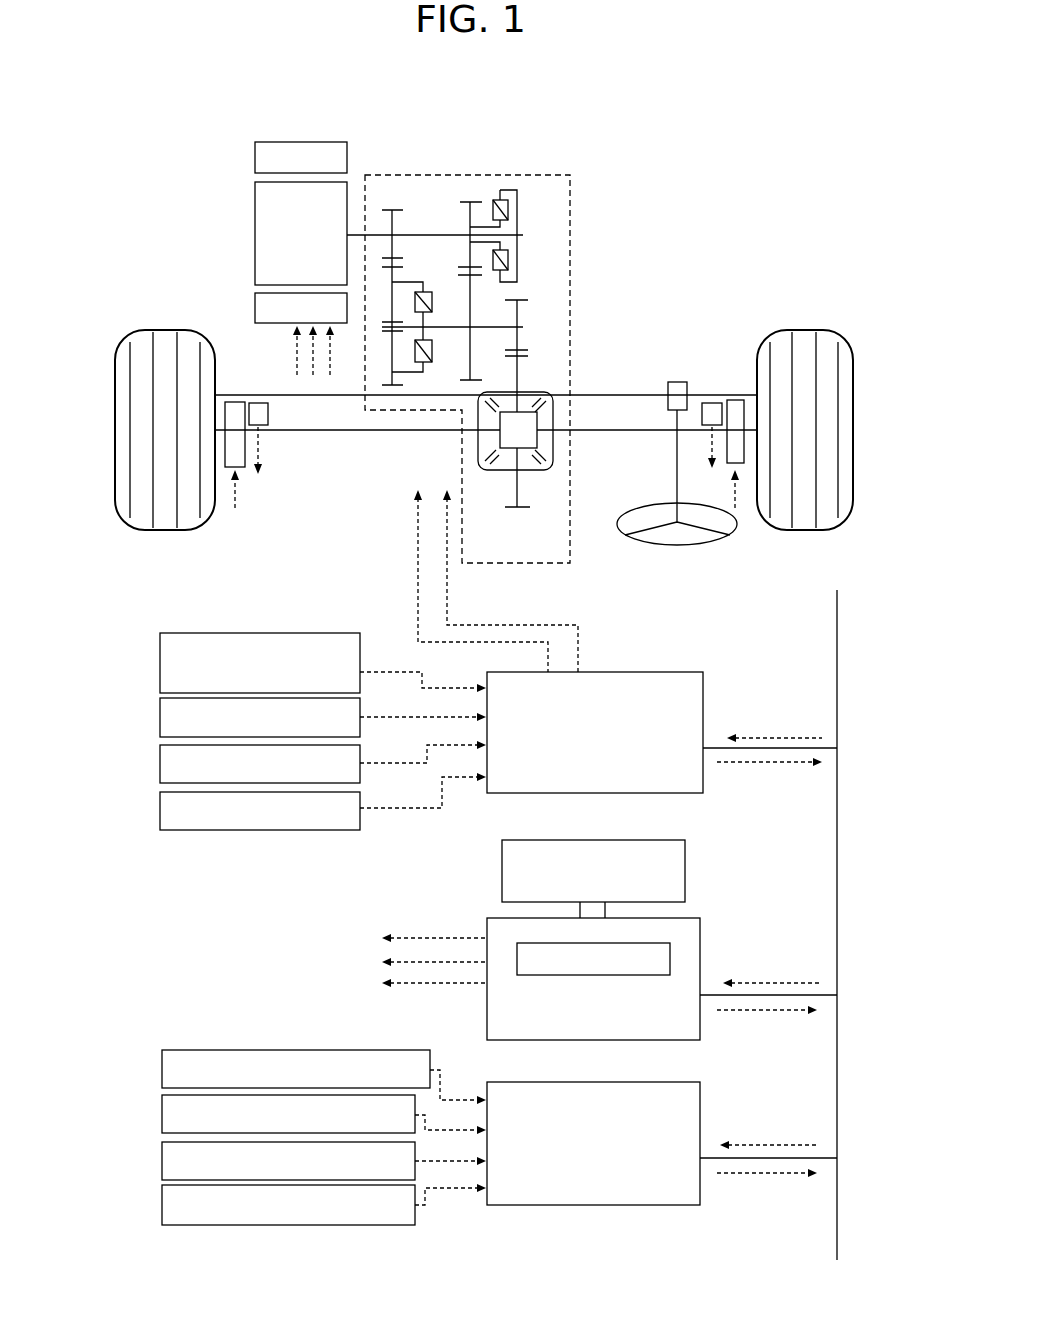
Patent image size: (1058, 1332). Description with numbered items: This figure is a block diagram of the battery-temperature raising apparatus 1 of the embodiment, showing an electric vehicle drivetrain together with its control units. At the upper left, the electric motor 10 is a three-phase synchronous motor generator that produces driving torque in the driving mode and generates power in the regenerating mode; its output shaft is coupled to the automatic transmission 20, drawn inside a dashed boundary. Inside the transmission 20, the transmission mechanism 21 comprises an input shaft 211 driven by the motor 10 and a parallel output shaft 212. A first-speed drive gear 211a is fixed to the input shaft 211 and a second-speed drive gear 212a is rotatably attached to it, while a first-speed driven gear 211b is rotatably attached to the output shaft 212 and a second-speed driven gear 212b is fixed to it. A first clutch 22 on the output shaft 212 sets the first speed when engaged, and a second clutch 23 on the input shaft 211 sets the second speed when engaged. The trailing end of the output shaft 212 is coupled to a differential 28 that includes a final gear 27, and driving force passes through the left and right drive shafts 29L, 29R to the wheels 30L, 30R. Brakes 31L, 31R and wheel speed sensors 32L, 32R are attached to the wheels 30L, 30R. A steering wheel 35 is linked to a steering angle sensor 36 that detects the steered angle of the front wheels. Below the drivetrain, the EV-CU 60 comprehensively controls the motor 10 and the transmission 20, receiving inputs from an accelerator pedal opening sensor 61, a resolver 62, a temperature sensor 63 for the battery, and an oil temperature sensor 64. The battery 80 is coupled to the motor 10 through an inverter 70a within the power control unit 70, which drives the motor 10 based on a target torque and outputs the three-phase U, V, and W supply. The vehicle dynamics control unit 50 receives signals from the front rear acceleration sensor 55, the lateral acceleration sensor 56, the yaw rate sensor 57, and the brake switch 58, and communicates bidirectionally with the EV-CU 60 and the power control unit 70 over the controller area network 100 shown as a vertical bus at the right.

The battery-temperature raising apparatus 1 is at (600, 168).
The electric motor 10 is at (255, 225).
The automatic transmission 20 is at (570, 258).
The transmission mechanism 21 is at (540, 236).
The first clutch 22 is at (432, 302).
The second clutch 23 is at (512, 208).
The final gear 27 is at (548, 351).
The differential 28 is at (553, 414).
The left drive shaft 29L is at (315, 432).
The right drive shaft 29R is at (605, 432).
The left wheel 30L is at (180, 330).
The right wheel 30R is at (805, 330).
The left brake 31L is at (235, 400).
The right brake 31R is at (735, 400).
The left wheel speed sensor 32L is at (258, 403).
The right wheel speed sensor 32R is at (711, 403).
The steering wheel 35 is at (660, 505).
The steering angle sensor 36 is at (672, 382).
The vehicle dynamics control unit 50 is at (700, 1122).
The front rear acceleration sensor 55 is at (162, 1073).
The lateral acceleration sensor 56 is at (162, 1118).
The yaw rate sensor 57 is at (162, 1164).
The brake switch 58 is at (162, 1208).
The EV-CU 60 is at (703, 703).
The accelerator pedal opening sensor 61 is at (160, 675).
The resolver 62 is at (160, 719).
The temperature sensor 63 is at (160, 765).
The oil temperature sensor 64 is at (160, 811).
The power control unit 70 is at (700, 928).
The inverter 70a is at (670, 960).
The battery 80 is at (685, 878).
The controller area network 100 is at (837, 612).
The input shaft 211 is at (367, 247).
The first-speed drive gear 211a is at (383, 222).
The first-speed driven gear 211b is at (367, 408).
The output shaft 212 is at (492, 327).
The second-speed drive gear 212a is at (462, 216).
The second-speed driven gear 212b is at (462, 352).